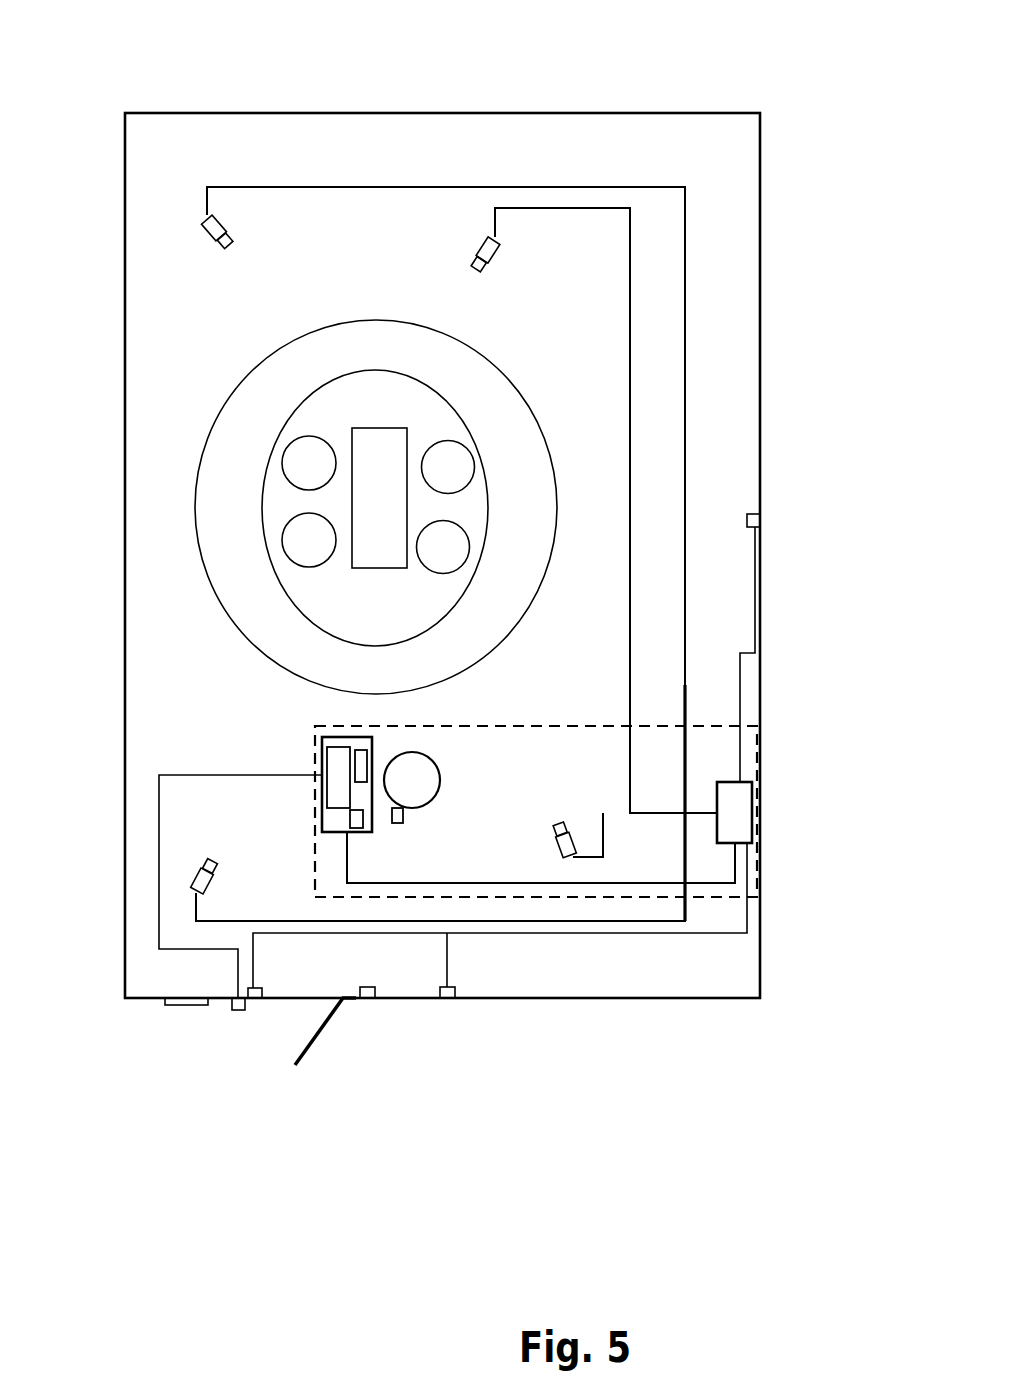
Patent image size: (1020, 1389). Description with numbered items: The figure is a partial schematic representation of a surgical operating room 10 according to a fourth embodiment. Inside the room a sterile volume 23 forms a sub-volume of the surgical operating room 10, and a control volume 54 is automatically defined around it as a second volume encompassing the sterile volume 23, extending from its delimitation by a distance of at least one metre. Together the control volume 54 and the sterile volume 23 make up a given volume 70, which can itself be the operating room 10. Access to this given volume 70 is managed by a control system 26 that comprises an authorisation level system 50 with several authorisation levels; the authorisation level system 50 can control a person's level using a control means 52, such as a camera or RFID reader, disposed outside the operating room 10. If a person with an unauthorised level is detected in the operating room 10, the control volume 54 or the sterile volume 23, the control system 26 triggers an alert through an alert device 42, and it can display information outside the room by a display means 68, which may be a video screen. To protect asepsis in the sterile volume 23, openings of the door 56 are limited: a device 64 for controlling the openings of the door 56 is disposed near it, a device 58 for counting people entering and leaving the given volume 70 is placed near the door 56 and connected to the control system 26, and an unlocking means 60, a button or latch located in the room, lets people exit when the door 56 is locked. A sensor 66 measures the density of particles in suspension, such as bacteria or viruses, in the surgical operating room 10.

The surgical operating room 10 is at (568, 147).
The given volume 70 is at (475, 140).
The control volume 54 is at (327, 350).
The sterile volume 23 is at (372, 390).
The control system 26 is at (593, 900).
The authorisation level system 50 is at (322, 808).
The alert device 42 is at (740, 815).
The sensor measuring a density of particles in suspension 66 is at (760, 527).
The display means 68 is at (188, 1005).
The control means 52 is at (238, 1010).
The device for controlling the openings of the door 64 is at (262, 998).
The door 56 is at (322, 1038).
The unlocking means 60 is at (367, 998).
The device for counting people 58 is at (448, 998).